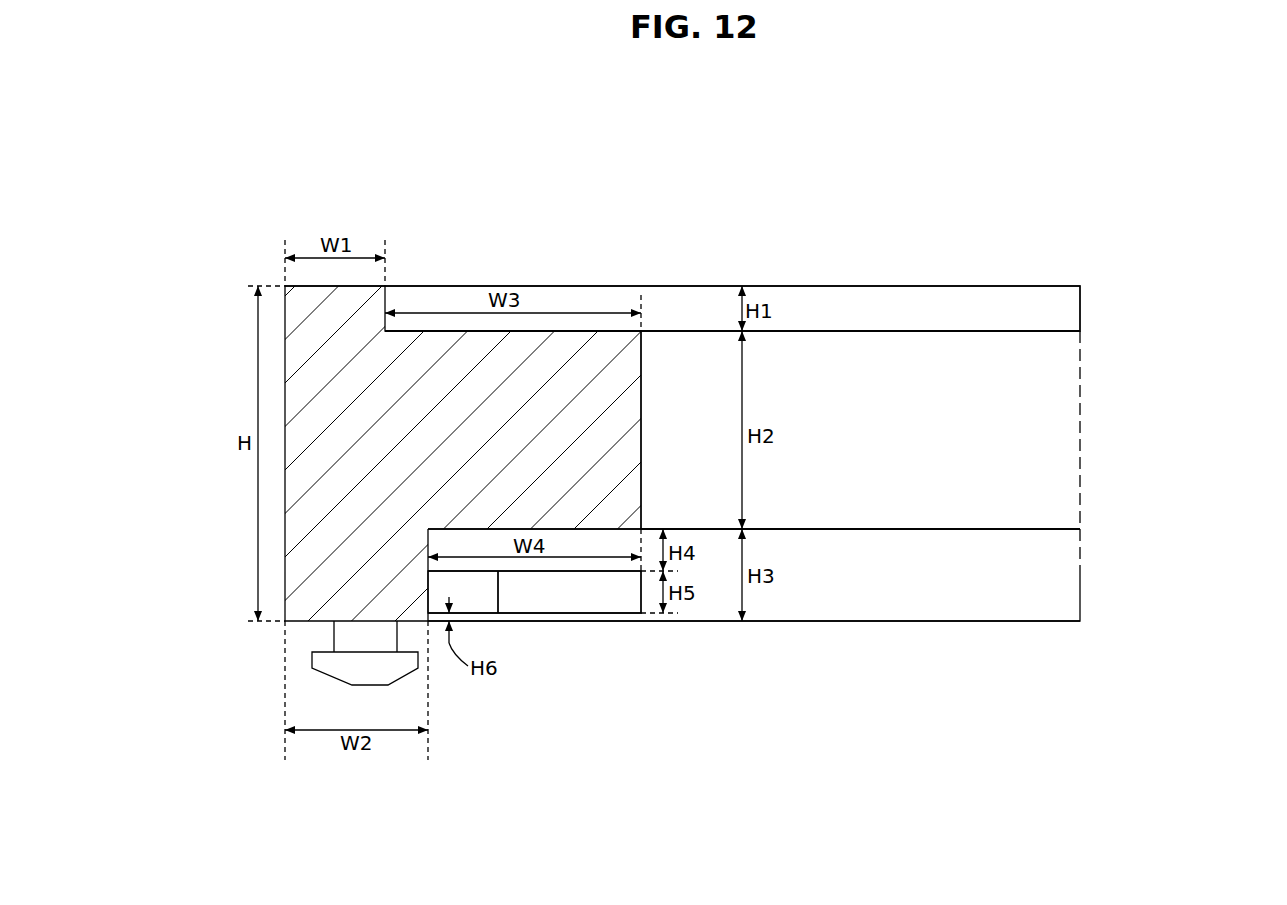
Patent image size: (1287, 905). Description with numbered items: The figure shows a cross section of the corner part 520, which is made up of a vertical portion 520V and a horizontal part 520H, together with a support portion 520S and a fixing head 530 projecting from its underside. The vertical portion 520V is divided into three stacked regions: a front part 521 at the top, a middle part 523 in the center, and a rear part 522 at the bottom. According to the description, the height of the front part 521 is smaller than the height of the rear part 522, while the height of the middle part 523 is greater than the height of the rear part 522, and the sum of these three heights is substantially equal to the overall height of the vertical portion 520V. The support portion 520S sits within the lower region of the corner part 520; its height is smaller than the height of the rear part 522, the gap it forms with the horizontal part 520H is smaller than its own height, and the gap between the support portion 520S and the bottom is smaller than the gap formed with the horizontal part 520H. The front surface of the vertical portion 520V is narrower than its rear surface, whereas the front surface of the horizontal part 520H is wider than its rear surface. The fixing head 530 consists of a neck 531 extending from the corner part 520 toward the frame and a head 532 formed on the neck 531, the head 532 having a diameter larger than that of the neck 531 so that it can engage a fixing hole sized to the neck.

The corner part 520 is at (1003, 161).
The horizontal part 520H is at (528, 376).
The vertical portion 520V is at (145, 580).
The support portion 520S is at (577, 600).
The front part 521 is at (333, 320).
The rear part 522 is at (330, 588).
The middle part 523 is at (328, 480).
The fixing head 530 is at (277, 673).
The neck 531 is at (353, 633).
The head 532 is at (360, 677).